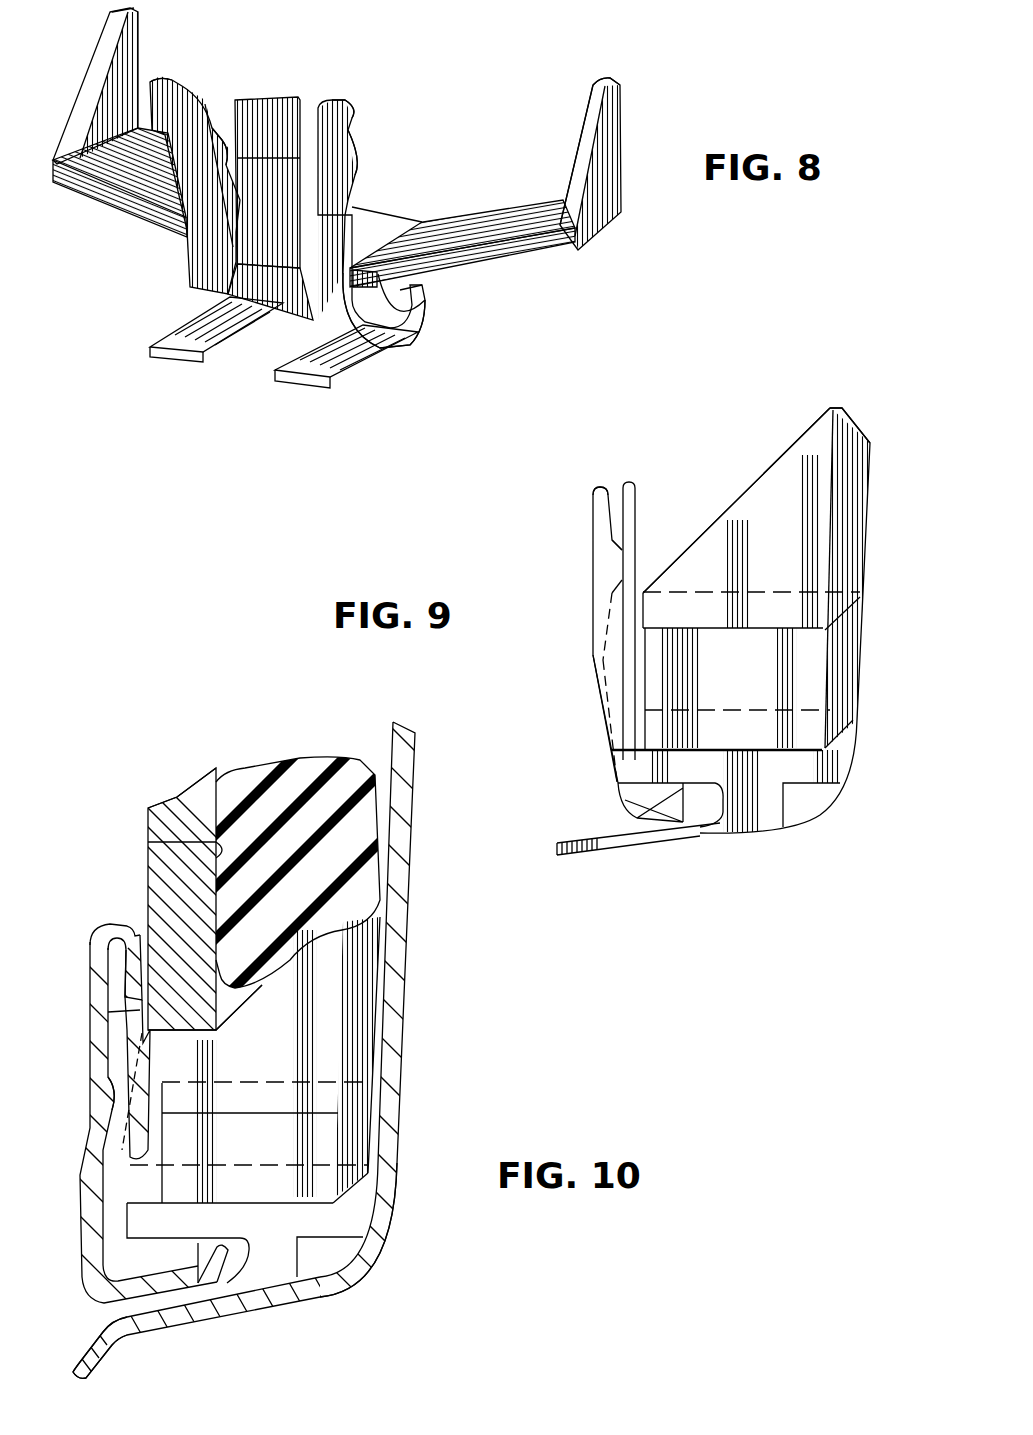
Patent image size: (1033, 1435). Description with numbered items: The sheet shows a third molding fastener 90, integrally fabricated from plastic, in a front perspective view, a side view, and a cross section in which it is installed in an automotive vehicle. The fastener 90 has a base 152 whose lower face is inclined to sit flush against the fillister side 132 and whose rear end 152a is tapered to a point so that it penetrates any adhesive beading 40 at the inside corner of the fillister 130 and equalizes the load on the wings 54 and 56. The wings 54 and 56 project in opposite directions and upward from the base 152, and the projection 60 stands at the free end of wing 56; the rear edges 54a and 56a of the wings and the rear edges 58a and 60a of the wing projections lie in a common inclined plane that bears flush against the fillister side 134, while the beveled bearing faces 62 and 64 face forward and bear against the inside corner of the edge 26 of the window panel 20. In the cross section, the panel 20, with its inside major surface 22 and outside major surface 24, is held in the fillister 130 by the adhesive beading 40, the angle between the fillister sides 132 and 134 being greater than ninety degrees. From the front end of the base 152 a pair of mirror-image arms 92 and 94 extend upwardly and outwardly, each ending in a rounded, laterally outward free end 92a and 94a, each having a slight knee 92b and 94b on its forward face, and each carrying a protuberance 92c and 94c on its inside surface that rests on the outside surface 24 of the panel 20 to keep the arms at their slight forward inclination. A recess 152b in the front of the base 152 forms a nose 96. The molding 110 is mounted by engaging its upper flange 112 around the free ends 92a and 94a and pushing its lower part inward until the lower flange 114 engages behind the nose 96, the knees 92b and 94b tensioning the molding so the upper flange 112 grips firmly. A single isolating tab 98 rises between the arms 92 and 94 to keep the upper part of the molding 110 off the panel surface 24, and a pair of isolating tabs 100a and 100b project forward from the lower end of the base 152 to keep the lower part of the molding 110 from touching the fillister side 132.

In FIG. 10, the window panel 20 is at (180, 776).
In FIG. 10, the inside major surface 22 is at (148, 842).
In FIG. 10, the outside major surface 24 is at (146, 812).
In FIG. 10, the edge 26 is at (168, 1040).
In FIG. 10, the adhesive beading 40 is at (299, 779).
In FIG. 8, the wing 54 is at (93, 196).
In FIG. 8, the rear edge of wing 54a is at (178, 96).
In FIG. 8, the wing 56 is at (548, 240).
In FIG. 9, the wing 56 is at (758, 690).
In FIG. 8, the rear edge of wing 56a is at (485, 208).
In FIG. 9, the rear edge of wing 56a is at (886, 670).
In FIG. 8, the rear edge of projection 58a is at (140, 34).
In FIG. 8, the projection 60 is at (608, 152).
In FIG. 9, the projection 60 is at (785, 555).
In FIG. 10, the projection 60 is at (322, 1062).
In FIG. 8, the rear edge of projection 60a is at (598, 80).
In FIG. 9, the rear edge of projection 60a is at (868, 506).
In FIG. 10, the rear edge of projection 60a is at (380, 1038).
In FIG. 8, the bearing face 62 is at (92, 88).
In FIG. 8, the bearing face 64 is at (588, 125).
In FIG. 9, the bearing face 64 is at (752, 490).
In FIG. 10, the bearing face 64 is at (245, 998).
In FIG. 8, the fastener 90 is at (266, 388).
In FIG. 9, the fastener 90 is at (797, 434).
In FIG. 8, the arm 92 is at (190, 172).
In FIG. 8, the free end of arm 92a is at (200, 100).
In FIG. 8, the knee 92b is at (190, 240).
In FIG. 8, the protuberance 92c is at (222, 145).
In FIG. 8, the arm 94 is at (325, 152).
In FIG. 9, the arm 94 is at (607, 635).
In FIG. 10, the arm 94 is at (118, 1072).
In FIG. 8, the free end of arm 94a is at (345, 108).
In FIG. 9, the free end of arm 94a is at (598, 492).
In FIG. 10, the free end of arm 94a is at (110, 948).
In FIG. 8, the knee 94b is at (388, 342).
In FIG. 9, the knee 94b is at (594, 658).
In FIG. 10, the knee 94b is at (96, 1105).
In FIG. 8, the protuberance 94c is at (360, 168).
In FIG. 9, the protuberance 94c is at (612, 562).
In FIG. 10, the protuberance 94c is at (115, 1010).
In FIG. 8, the nose 96 is at (290, 318).
In FIG. 9, the nose 96 is at (640, 793).
In FIG. 10, the nose 96 is at (150, 1257).
In FIG. 8, the isolating tab 98 is at (280, 125).
In FIG. 9, the isolating tab 98 is at (630, 500).
In FIG. 10, the isolating tab 98 is at (148, 928).
In FIG. 8, the isolating tab 100a is at (190, 347).
In FIG. 8, the isolating tab 100b is at (325, 382).
In FIG. 9, the isolating tab 100b is at (630, 848).
In FIG. 10, the isolating tab 100b is at (136, 1322).
In FIG. 10, the molding 110 is at (76, 1174).
In FIG. 10, the upper flange 112 is at (108, 922).
In FIG. 10, the lower flange 114 is at (217, 1288).
In FIG. 10, the fillister 130 is at (346, 1279).
In FIG. 10, the fillister side 132 is at (242, 1313).
In FIG. 10, the fillister side 134 is at (400, 992).
In FIG. 8, the base 152 is at (403, 308).
In FIG. 9, the base 152 is at (768, 825).
In FIG. 10, the base 152 is at (278, 1285).
In FIG. 9, the rear end of base 152a is at (807, 803).
In FIG. 10, the rear end of base 152a is at (320, 1258).
In FIG. 8, the recess 152b is at (405, 300).
In FIG. 9, the recess 152b is at (640, 812).
In FIG. 10, the recess 152b is at (222, 1238).